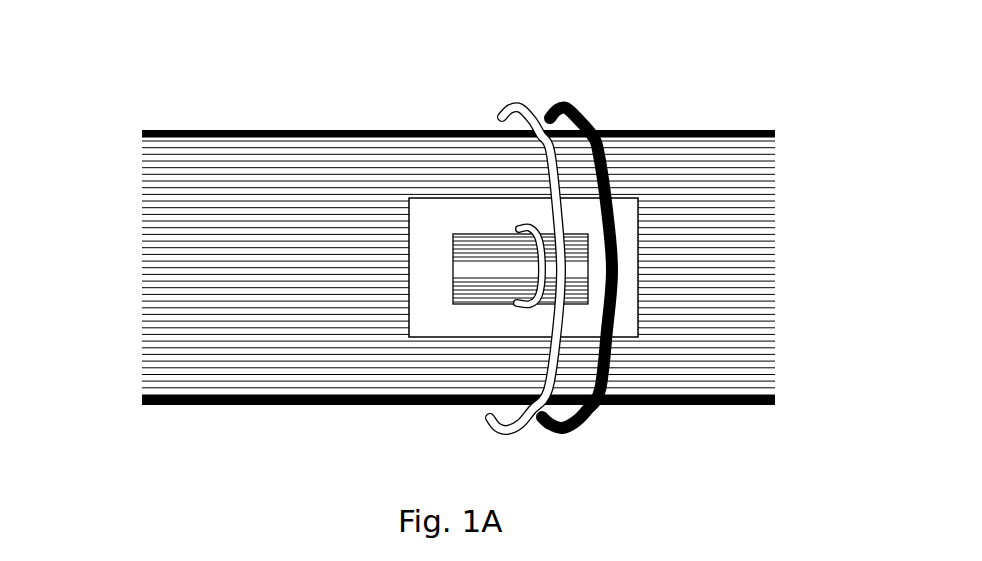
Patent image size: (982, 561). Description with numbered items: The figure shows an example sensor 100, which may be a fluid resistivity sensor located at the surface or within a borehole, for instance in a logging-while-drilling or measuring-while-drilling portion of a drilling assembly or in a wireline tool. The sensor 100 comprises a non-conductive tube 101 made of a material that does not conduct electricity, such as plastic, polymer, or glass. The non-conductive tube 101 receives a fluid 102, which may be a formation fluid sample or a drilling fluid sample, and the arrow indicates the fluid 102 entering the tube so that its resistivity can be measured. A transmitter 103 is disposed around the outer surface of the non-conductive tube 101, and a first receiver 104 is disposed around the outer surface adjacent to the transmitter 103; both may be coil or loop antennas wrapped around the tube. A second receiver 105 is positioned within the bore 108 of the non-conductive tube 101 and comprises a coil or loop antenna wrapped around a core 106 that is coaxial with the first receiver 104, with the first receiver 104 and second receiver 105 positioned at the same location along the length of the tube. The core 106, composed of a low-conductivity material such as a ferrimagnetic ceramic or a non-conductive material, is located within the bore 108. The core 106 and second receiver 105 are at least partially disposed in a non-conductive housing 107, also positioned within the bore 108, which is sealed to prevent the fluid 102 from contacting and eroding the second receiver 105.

The sensor 100 is at (416, 251).
The non-conductive tube 101 is at (718, 404).
The fluid 102 is at (167, 274).
The transmitter 103 is at (566, 108).
The first receiver 104 is at (507, 107).
The second receiver 105 is at (520, 229).
The core 106 is at (453, 268).
The non-conductive housing 107 is at (409, 287).
The bore 108 is at (438, 375).